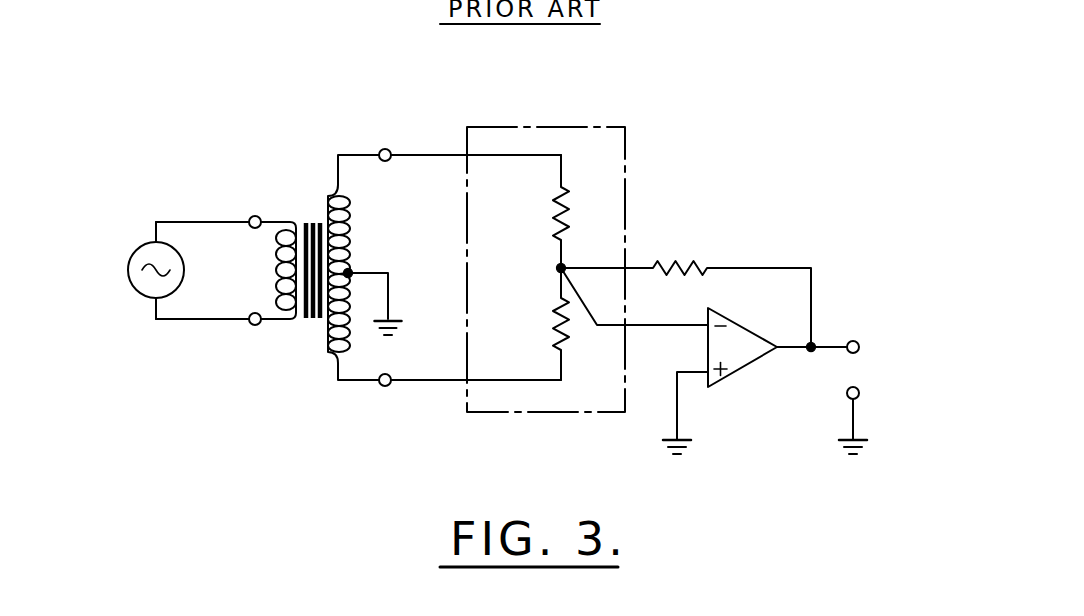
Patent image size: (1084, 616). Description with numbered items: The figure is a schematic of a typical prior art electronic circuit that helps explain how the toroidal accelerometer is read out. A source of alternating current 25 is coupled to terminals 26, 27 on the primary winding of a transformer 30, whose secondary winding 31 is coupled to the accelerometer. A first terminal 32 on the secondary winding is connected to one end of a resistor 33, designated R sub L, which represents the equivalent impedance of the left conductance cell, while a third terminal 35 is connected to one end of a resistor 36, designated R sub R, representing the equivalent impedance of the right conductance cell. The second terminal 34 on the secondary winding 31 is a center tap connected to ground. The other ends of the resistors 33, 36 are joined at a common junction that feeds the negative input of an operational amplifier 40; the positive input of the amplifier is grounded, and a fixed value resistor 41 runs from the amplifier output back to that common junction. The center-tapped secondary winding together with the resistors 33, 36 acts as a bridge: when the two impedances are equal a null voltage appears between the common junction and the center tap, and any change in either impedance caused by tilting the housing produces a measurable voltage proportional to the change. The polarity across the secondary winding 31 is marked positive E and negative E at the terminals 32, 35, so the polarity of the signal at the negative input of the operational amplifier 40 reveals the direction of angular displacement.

The source of alternating current 25 is at (138, 249).
The terminal 26 is at (255, 214).
The terminal 27 is at (256, 326).
The transformer 30 is at (321, 168).
The secondary winding 31 is at (351, 232).
The first terminal 32 is at (385, 149).
The resistor 33 is at (565, 195).
The second terminal 34 is at (351, 271).
The third terminal 35 is at (385, 386).
The resistor 36 is at (568, 326).
The operational amplifier 40 is at (743, 324).
The fixed value resistor 41 is at (706, 266).